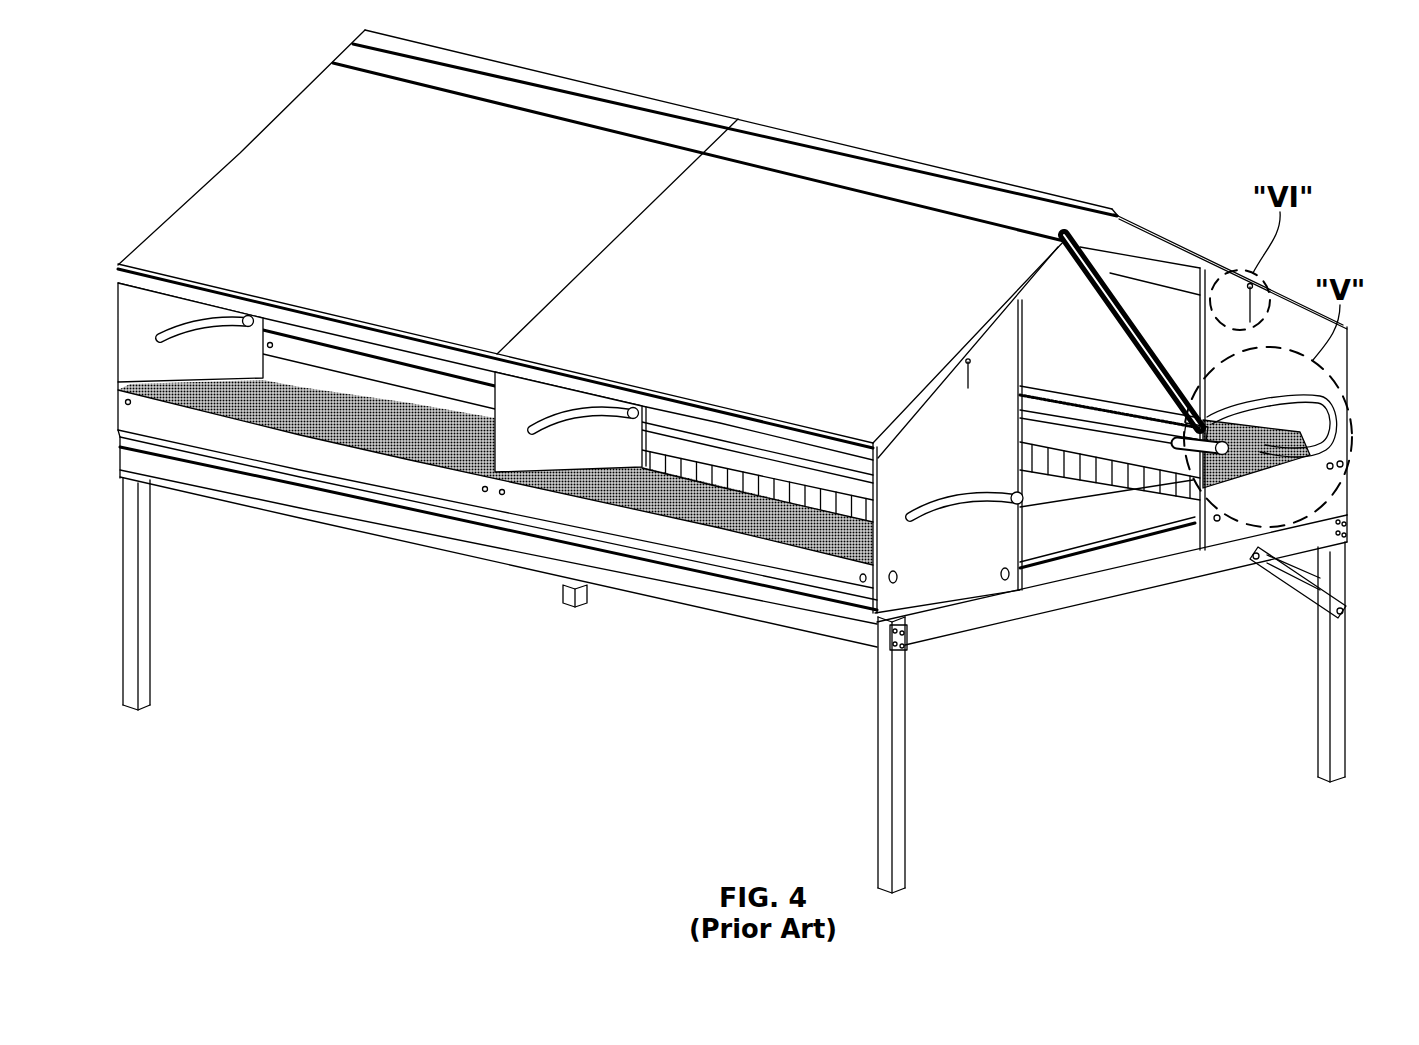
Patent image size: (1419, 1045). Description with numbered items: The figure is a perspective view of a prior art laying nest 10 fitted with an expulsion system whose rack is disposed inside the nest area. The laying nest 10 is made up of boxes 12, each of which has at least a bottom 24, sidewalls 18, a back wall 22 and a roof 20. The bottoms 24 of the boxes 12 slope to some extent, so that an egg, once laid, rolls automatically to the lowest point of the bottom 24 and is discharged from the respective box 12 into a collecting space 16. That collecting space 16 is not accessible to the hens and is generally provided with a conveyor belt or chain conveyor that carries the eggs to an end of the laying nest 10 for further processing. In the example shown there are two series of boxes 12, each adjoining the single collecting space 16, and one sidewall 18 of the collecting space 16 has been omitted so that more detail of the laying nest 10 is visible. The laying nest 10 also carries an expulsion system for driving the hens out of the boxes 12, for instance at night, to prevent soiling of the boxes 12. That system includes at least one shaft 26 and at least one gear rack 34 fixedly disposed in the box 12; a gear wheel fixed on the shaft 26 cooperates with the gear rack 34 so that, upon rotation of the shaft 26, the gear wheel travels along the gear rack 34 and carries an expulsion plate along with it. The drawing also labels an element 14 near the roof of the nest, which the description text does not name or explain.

The laying nest 10 is at (1050, 159).
The box 12 is at (1349, 345).
The lid support strut 14 is at (1110, 273).
The collecting space 16 is at (1067, 543).
The sidewall 18 is at (197, 365).
The roof 20 is at (700, 247).
The back wall 22 is at (717, 430).
The bottom 24 is at (380, 433).
The shaft 26 is at (1110, 407).
The gear rack 34 is at (1345, 442).